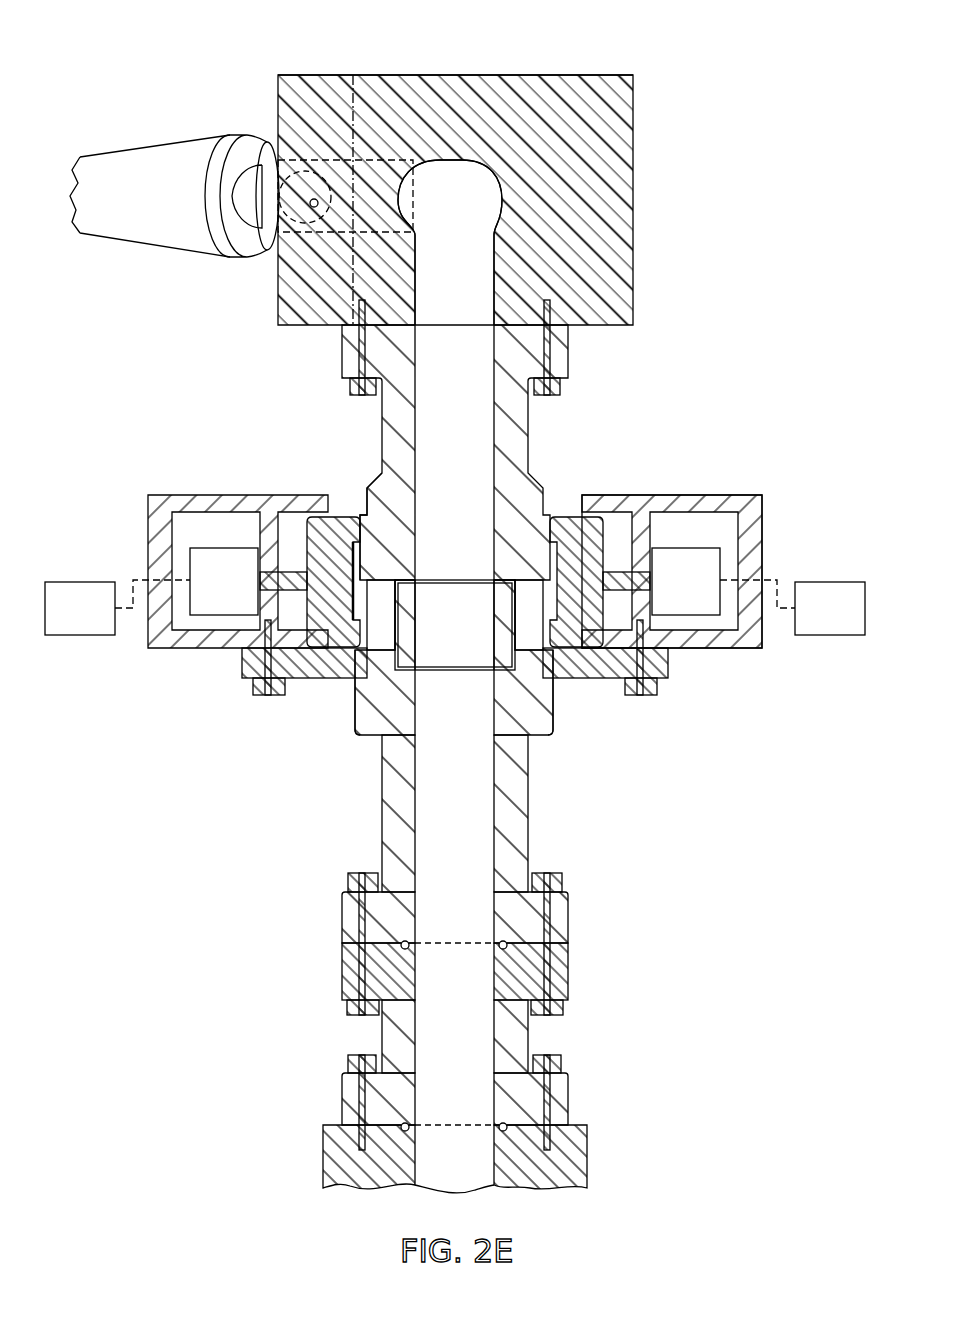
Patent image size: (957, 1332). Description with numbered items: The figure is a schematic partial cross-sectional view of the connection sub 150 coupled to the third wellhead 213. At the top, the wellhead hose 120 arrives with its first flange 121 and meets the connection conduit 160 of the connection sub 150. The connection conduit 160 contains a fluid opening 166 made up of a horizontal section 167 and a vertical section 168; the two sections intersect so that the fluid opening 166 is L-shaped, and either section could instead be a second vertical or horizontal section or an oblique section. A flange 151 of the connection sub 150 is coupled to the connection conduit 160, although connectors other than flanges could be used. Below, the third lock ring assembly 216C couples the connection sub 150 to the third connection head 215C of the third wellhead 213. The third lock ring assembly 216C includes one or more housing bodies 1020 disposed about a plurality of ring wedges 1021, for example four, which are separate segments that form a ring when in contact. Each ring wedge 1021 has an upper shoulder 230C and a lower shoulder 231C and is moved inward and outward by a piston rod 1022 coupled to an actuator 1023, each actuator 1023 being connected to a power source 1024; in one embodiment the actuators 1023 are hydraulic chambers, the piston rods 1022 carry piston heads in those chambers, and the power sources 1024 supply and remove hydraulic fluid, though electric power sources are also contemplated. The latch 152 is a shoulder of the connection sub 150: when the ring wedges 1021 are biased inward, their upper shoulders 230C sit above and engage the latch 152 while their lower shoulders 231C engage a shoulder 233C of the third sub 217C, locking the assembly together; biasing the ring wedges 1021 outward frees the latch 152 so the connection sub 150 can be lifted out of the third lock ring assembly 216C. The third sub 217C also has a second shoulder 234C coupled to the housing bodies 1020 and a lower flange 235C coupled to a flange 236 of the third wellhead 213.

The wellhead hose 120 is at (140, 232).
The first flange 121 is at (276, 150).
The connection conduit 160 is at (600, 297).
The fluid opening 166 is at (500, 157).
The horizontal section 167 is at (377, 160).
The vertical section 168 is at (476, 270).
The connection sub 150 is at (545, 437).
The flange 151 is at (563, 352).
The latch 152 is at (385, 540).
The upper shoulder 230C is at (358, 535).
The housing body 1020 is at (160, 498).
The ring wedge 1021 is at (287, 513).
The piston rod 1022 is at (268, 572).
The actuator 1023 is at (249, 594).
The power source 1024 is at (106, 619).
The shoulder 233C is at (500, 598).
The lower shoulder 231C is at (357, 632).
The third lock ring assembly 216C is at (780, 540).
The second shoulder 234C is at (603, 665).
The third connection head 215C is at (322, 699).
The third sub 217C is at (403, 718).
The lower flange 235C is at (570, 920).
The flange 236 is at (525, 973).
The third wellhead 213 is at (310, 1092).